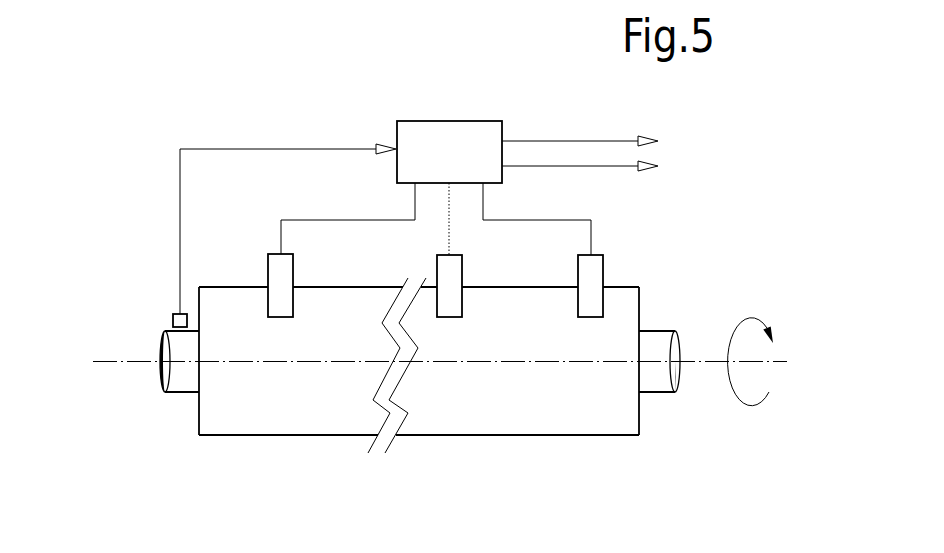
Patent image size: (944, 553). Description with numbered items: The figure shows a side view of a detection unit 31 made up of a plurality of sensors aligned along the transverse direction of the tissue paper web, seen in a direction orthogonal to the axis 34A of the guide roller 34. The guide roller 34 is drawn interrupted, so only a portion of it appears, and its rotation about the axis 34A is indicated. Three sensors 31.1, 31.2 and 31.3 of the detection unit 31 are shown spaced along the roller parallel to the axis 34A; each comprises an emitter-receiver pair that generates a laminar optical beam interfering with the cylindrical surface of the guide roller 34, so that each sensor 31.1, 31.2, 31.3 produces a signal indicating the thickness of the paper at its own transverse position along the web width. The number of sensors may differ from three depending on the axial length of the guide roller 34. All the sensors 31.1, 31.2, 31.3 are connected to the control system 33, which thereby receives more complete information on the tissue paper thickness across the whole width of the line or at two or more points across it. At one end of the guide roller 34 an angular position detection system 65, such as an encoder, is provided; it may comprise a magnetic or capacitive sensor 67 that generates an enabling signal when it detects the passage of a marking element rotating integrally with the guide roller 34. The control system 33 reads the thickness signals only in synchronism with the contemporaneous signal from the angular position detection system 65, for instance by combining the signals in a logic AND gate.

The detection unit 31 is at (699, 226).
The first sensor 31.1 is at (287, 270).
The second sensor 31.2 is at (451, 270).
The third sensor 31.3 is at (592, 269).
The control system 33 is at (422, 135).
The guide roller 34 is at (328, 424).
The axis of the guide roller 34A is at (113, 363).
The angular position detection system 65 is at (137, 323).
The magnetic or capacitive sensor 67 is at (172, 320).